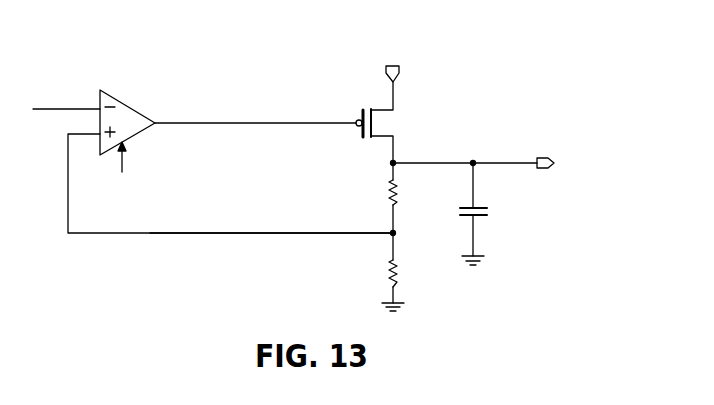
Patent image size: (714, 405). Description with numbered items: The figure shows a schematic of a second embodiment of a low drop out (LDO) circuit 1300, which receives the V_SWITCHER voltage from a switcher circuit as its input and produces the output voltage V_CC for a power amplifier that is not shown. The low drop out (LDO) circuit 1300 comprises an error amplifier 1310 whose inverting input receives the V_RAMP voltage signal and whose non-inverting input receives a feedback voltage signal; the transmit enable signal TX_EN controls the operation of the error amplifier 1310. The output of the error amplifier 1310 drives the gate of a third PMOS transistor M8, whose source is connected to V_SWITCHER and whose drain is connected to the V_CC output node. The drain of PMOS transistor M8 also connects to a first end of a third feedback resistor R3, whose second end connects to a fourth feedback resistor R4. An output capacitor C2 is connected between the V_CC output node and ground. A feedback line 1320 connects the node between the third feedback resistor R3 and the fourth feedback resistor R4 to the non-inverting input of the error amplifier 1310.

The low drop out (LDO) circuit 1300 is at (521, 47).
The error amplifier 1310 is at (125, 104).
The feedback line 1320 is at (203, 233).
The third P-type metal oxide semiconductor (PMOS) transistor M8 is at (390, 122).
The third feedback resistor R3 is at (406, 198).
The fourth feedback resistor R4 is at (402, 272).
The output capacitor C2 is at (486, 214).